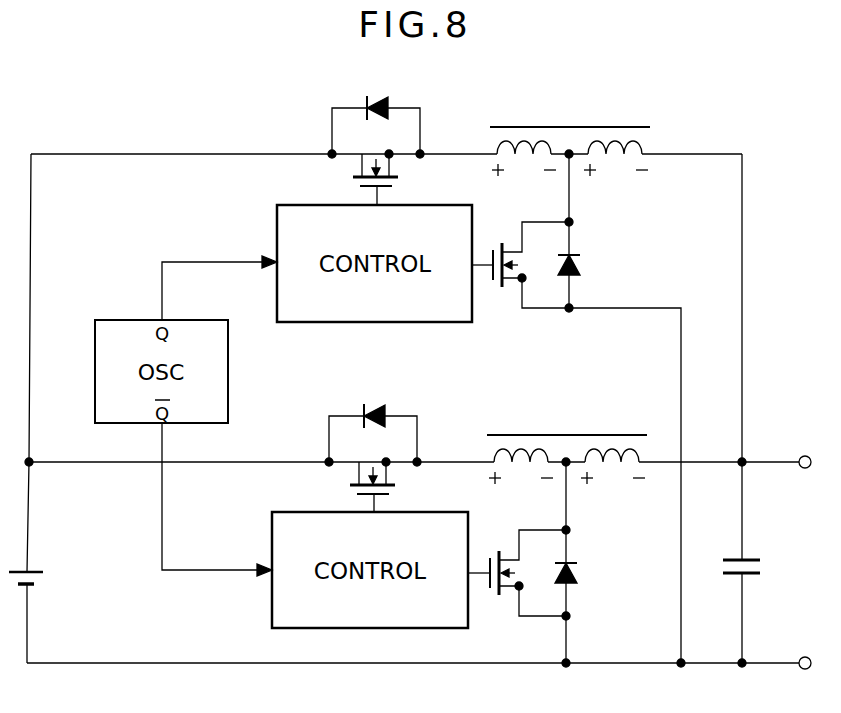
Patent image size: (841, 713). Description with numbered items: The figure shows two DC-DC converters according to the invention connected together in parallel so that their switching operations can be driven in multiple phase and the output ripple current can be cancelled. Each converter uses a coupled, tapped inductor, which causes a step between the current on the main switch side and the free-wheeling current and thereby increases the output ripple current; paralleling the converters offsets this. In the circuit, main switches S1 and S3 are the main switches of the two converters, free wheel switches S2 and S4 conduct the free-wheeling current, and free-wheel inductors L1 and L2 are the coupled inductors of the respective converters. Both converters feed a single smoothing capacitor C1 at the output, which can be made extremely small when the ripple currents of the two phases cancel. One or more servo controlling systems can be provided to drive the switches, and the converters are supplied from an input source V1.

The main switch S1 is at (359, 150).
The free wheel switch S2 is at (538, 233).
The main switch S3 is at (356, 458).
The free wheel switch S4 is at (535, 541).
The free-wheel inductor L1 is at (570, 137).
The free-wheel inductor L2 is at (567, 445).
The smoothing capacitor C1 is at (760, 557).
The input voltage source V1 is at (39, 562).